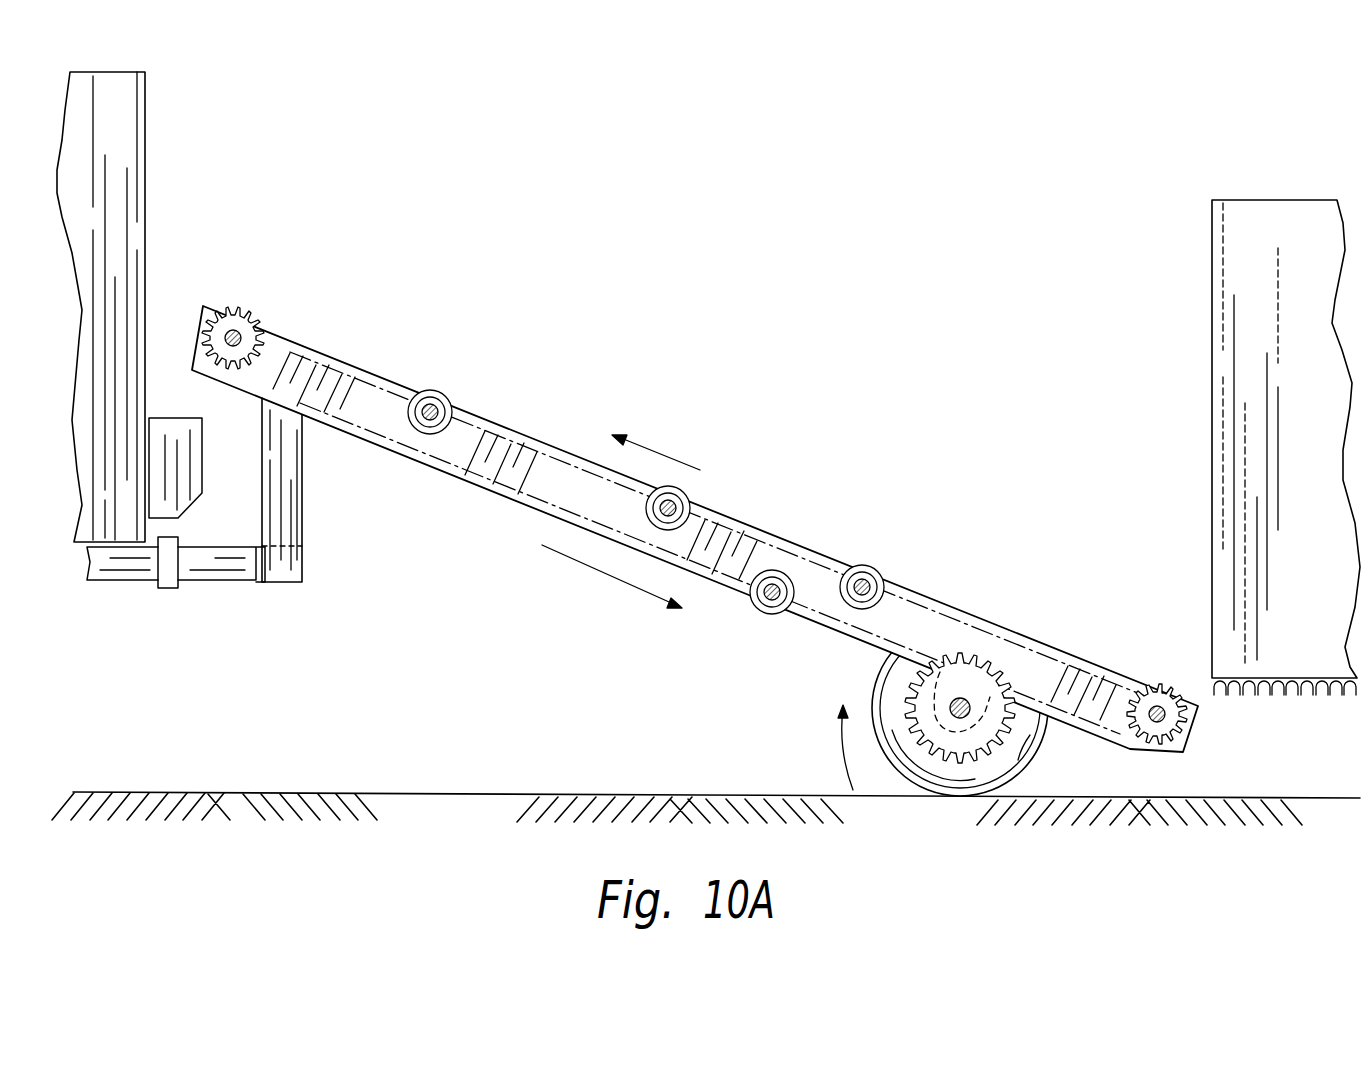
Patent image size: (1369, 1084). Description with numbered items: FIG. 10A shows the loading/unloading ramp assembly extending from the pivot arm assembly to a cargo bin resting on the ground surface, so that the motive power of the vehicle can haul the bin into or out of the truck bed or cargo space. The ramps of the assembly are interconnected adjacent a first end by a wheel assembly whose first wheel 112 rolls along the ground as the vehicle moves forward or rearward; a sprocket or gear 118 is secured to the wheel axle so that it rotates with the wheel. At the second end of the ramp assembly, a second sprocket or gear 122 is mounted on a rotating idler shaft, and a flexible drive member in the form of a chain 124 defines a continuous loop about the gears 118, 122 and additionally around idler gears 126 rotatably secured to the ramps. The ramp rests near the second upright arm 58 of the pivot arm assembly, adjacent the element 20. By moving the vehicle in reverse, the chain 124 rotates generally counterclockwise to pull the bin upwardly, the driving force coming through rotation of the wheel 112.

The step 20 is at (1175, 326).
The second upright arm 58 is at (283, 497).
The first wheel 112 is at (880, 700).
The sprocket or gear 118 is at (998, 685).
The sprocket or gear 122 is at (243, 327).
The chain 124 is at (385, 365).
The idler gears 126 is at (1180, 717).